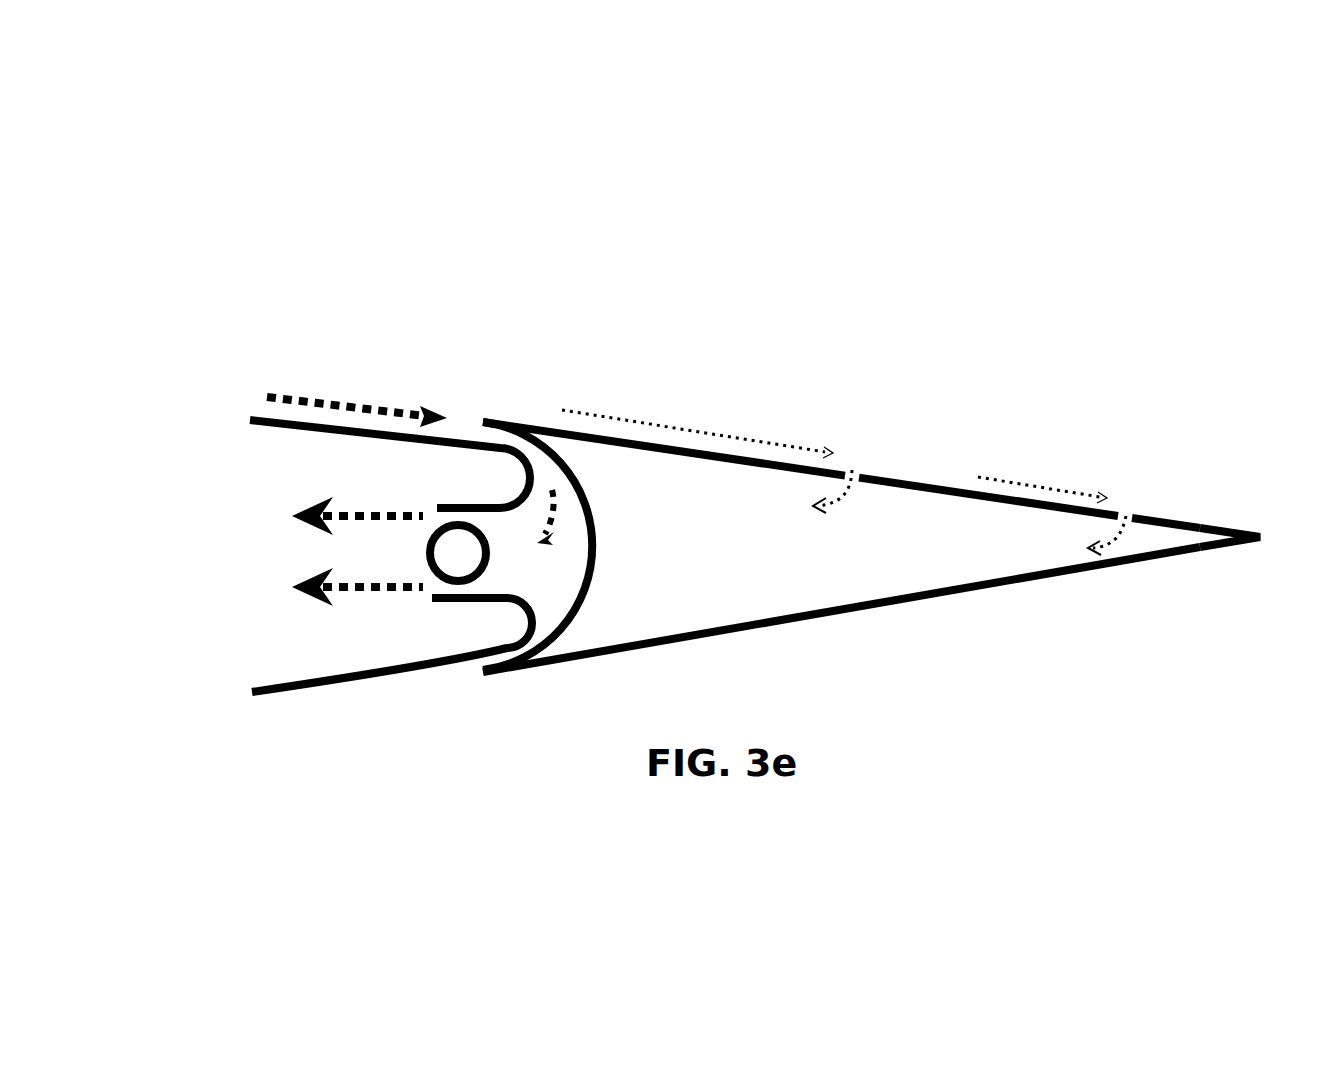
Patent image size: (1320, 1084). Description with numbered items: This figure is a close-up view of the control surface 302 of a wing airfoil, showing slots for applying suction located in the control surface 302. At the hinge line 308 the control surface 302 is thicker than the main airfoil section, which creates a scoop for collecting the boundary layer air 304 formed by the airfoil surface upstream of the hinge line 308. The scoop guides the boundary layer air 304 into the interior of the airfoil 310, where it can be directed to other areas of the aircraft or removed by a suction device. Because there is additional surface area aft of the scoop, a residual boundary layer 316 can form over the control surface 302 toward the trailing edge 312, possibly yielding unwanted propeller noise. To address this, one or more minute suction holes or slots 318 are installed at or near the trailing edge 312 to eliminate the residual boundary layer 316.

The control surface 302 is at (1050, 280).
The boundary layer air 304 is at (353, 408).
The hinge line 308 is at (503, 417).
The interior of the airfoil 310 is at (250, 598).
The trailing edge 312 is at (1254, 545).
The residual boundary layer 316 is at (673, 430).
The suction holes or slots 318 is at (852, 467).